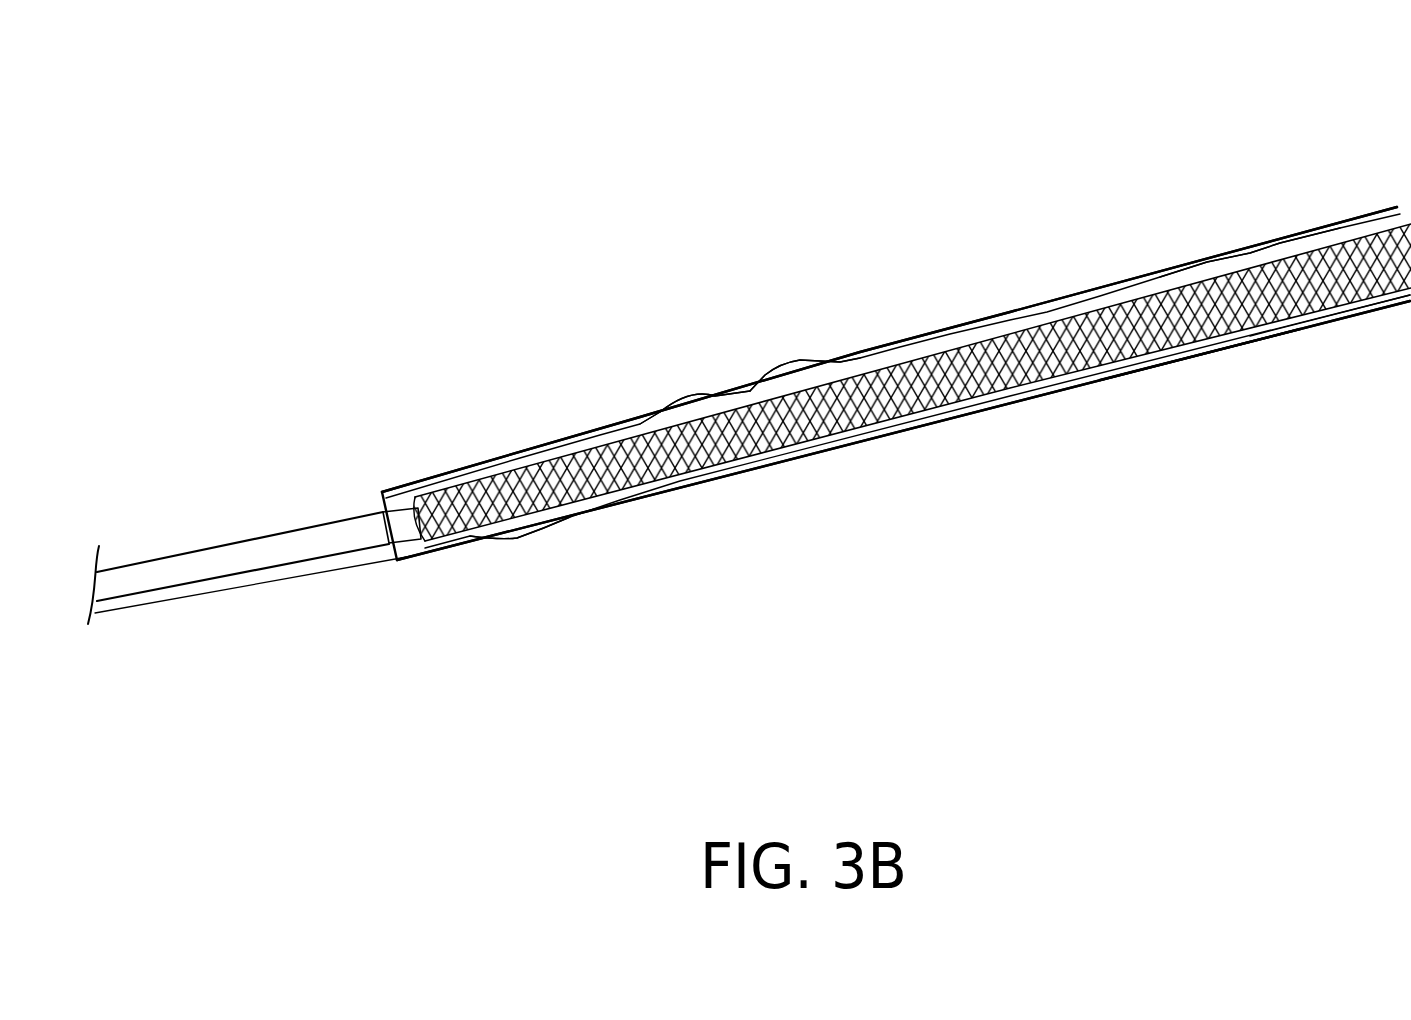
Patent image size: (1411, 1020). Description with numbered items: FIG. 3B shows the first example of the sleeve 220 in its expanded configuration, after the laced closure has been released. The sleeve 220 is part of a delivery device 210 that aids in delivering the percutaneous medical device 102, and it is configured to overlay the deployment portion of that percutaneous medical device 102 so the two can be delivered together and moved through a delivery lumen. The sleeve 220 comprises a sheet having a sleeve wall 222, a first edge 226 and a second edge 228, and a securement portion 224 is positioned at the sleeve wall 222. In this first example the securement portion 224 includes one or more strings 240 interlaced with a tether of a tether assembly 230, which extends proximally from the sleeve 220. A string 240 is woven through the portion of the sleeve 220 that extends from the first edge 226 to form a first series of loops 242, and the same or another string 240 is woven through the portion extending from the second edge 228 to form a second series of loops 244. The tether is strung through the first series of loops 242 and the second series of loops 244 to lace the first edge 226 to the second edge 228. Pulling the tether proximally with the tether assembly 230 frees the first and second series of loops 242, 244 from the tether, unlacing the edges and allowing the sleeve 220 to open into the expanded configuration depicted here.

The delivery device 210 is at (1212, 120).
The percutaneous medical device 102 is at (548, 472).
The sleeve 220 is at (1188, 400).
The sleeve wall 222 is at (1107, 291).
The securement portion 224 is at (848, 425).
The first edge 226 is at (975, 318).
The second edge 228 is at (1002, 408).
The tether assembly 230 is at (197, 607).
The strings 240 is at (690, 393).
The first series of loops 242 is at (1208, 262).
The second series of loops 244 is at (1383, 303).